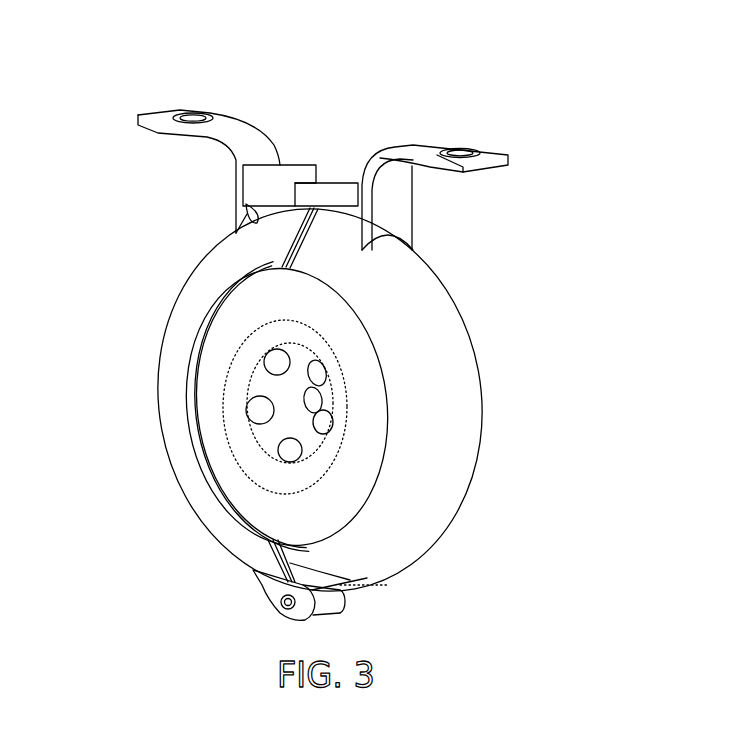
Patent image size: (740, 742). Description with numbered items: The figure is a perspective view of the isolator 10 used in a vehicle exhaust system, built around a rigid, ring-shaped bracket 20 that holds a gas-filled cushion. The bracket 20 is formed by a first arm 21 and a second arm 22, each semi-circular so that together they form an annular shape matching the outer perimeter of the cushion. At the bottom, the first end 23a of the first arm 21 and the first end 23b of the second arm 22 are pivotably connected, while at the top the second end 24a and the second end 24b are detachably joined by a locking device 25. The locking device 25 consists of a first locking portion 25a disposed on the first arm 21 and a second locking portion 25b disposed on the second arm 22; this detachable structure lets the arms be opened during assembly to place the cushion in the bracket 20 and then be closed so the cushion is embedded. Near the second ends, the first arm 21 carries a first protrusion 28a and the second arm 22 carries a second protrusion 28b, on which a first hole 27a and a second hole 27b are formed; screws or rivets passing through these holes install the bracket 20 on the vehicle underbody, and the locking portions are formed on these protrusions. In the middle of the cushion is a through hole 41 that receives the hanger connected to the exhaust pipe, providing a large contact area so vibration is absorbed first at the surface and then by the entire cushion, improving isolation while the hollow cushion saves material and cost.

The isolator 10 is at (530, 258).
The bracket 20 is at (460, 404).
The first arm 21 is at (193, 296).
The second arm 22 is at (447, 322).
The first end of the first arm 23a is at (253, 570).
The first end of the second arm 23b is at (370, 583).
The second end of the first arm 24a is at (224, 252).
The second end of the second arm 24b is at (320, 238).
The locking device 25 is at (375, 107).
The first locking portion 25a is at (276, 180).
The second locking portion 25b is at (323, 193).
The first hole 27a is at (195, 110).
The second hole 27b is at (455, 149).
The first protrusion 28a is at (160, 134).
The second protrusion 28b is at (460, 172).
The through hole 41 is at (290, 426).